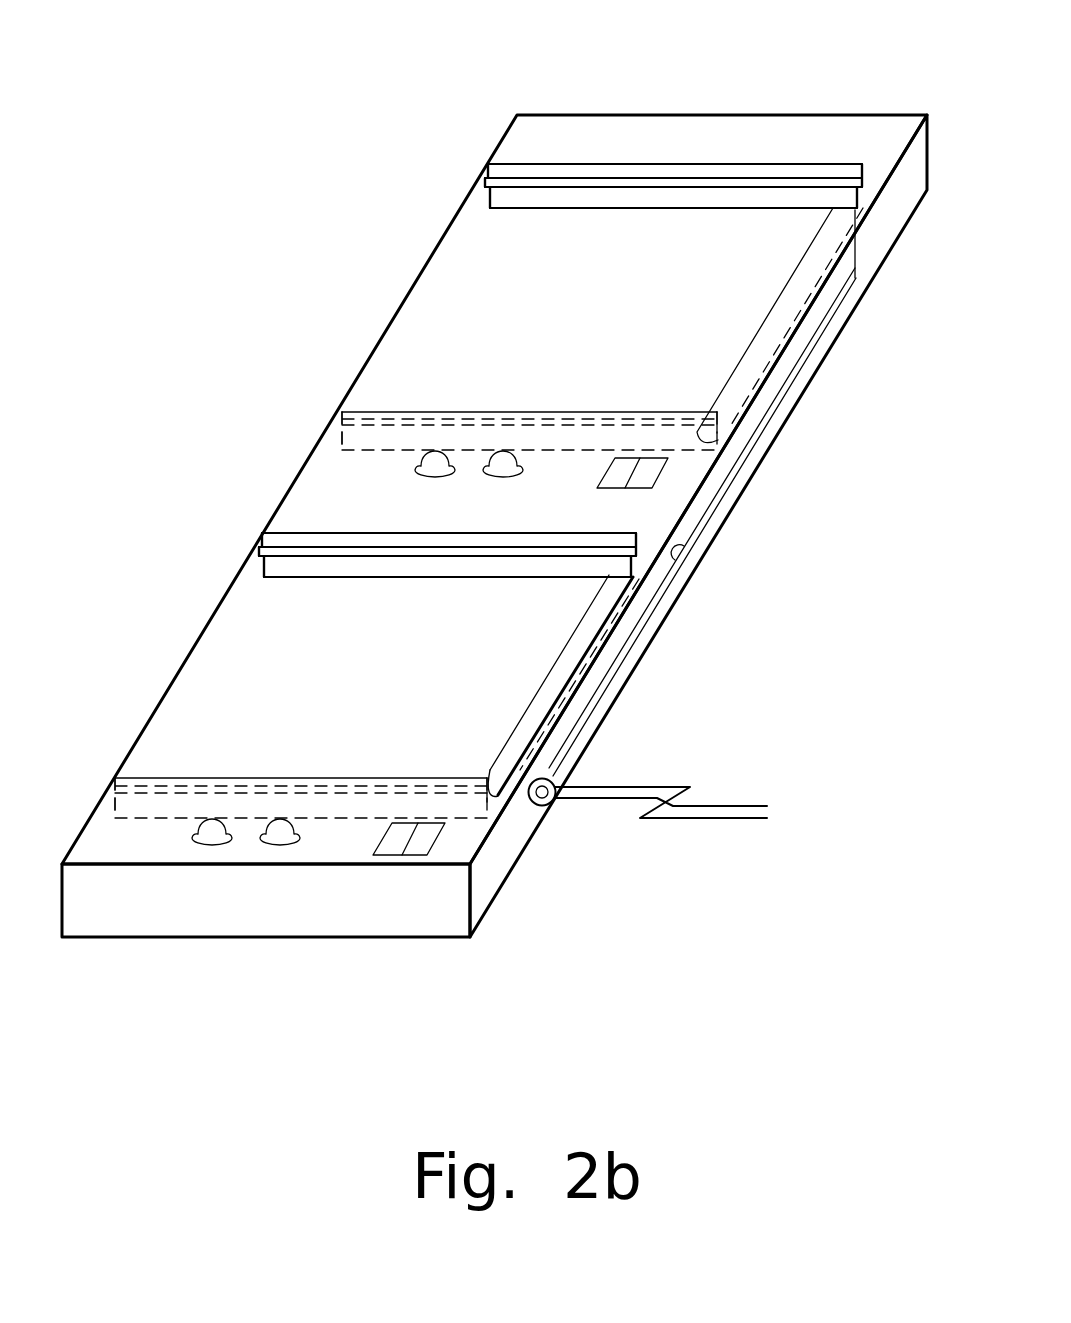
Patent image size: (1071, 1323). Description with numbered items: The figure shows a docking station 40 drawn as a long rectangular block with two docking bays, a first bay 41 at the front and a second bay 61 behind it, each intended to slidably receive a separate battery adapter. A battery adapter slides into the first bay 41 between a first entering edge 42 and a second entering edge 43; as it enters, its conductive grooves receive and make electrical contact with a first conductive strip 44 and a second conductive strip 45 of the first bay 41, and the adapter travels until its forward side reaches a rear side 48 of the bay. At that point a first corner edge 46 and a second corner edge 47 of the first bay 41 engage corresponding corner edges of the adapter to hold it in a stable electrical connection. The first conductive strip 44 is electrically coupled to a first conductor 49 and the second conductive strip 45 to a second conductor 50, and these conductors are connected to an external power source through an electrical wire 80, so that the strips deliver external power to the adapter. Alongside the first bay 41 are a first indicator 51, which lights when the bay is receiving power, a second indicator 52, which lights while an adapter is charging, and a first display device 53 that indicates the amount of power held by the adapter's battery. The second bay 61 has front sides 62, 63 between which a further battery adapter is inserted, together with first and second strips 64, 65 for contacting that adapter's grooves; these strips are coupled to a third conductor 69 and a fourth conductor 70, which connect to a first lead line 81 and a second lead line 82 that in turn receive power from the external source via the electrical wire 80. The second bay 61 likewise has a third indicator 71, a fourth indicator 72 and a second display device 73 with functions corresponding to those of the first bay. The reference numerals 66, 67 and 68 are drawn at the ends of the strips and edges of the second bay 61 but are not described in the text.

The docking station 40 is at (677, 98).
The first bay 41 is at (230, 660).
The first entering edge 42 is at (110, 800).
The second entering edge 43 is at (270, 565).
The first conductive strip 44 is at (322, 795).
The second conductive strip 45 is at (442, 563).
The first corner edge 46 is at (488, 802).
The second corner edge 47 is at (602, 571).
The rear side 48 is at (562, 673).
The first conductor 49 is at (513, 800).
The second conductor 50 is at (594, 632).
The first indicator 51 is at (192, 840).
The second indicator 52 is at (300, 843).
The first display device 53 is at (392, 858).
The second bay 61 is at (430, 340).
The front side 62 is at (342, 412).
The front side 63 is at (497, 197).
The first strip 64 is at (548, 423).
The second strip 65 is at (668, 195).
The second end of second adhesive region 66 is at (687, 433).
The second end of second terminal bar 67 is at (832, 203).
The second conductor strip edge 68 is at (786, 302).
The third conductor 69 is at (752, 418).
The fourth conductor 70 is at (857, 258).
The third indicator 71 is at (418, 470).
The fourth indicator 72 is at (520, 470).
The second display device 73 is at (608, 490).
The electrical wire 80 is at (608, 798).
The first lead line 81 is at (690, 548).
The second lead line 82 is at (718, 502).